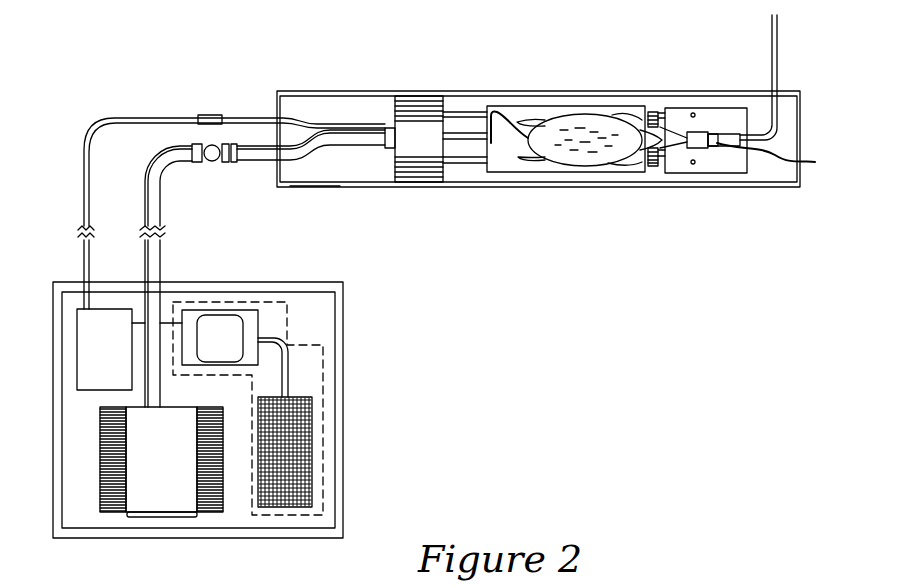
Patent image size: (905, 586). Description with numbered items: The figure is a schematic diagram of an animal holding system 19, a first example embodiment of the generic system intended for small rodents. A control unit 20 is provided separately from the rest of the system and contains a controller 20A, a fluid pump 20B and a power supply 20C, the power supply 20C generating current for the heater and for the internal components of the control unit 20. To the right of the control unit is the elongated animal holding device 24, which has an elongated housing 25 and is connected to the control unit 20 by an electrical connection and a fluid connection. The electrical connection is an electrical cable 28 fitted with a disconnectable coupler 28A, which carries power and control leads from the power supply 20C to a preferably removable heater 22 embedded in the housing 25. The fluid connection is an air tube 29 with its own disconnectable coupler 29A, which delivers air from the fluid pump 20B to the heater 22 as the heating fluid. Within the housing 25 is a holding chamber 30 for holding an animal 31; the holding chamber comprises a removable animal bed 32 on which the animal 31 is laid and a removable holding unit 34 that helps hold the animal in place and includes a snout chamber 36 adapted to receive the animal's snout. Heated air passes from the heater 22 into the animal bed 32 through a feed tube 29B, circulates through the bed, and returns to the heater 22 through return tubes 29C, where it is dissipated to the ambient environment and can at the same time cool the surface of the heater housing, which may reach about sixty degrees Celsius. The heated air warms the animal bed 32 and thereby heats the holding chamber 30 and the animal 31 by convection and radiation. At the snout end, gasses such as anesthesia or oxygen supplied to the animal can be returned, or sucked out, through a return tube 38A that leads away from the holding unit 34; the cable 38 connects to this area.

The animal holding system 19 is at (87, 72).
The control unit 20 is at (376, 333).
The controller 20A is at (104, 349).
The fluid pump 20B is at (161, 462).
The power supply 20C is at (343, 460).
The heater 22 is at (392, 168).
The animal holding device 24 is at (363, 77).
The housing 25 is at (313, 187).
The electrical cable 28 is at (133, 116).
The disconnectable coupler 28A is at (211, 115).
The air tube 29 is at (168, 180).
The disconnectable coupler 29A is at (213, 145).
The feed tube 29B is at (460, 141).
The return tube 29C is at (460, 111).
The holding chamber 30 is at (748, 87).
The animal 31 is at (608, 150).
The animal bed 32 is at (632, 173).
The holding unit 34 is at (748, 164).
The snout chamber 36 is at (689, 149).
The cable 38 is at (778, 50).
The return tube 38A is at (816, 161).